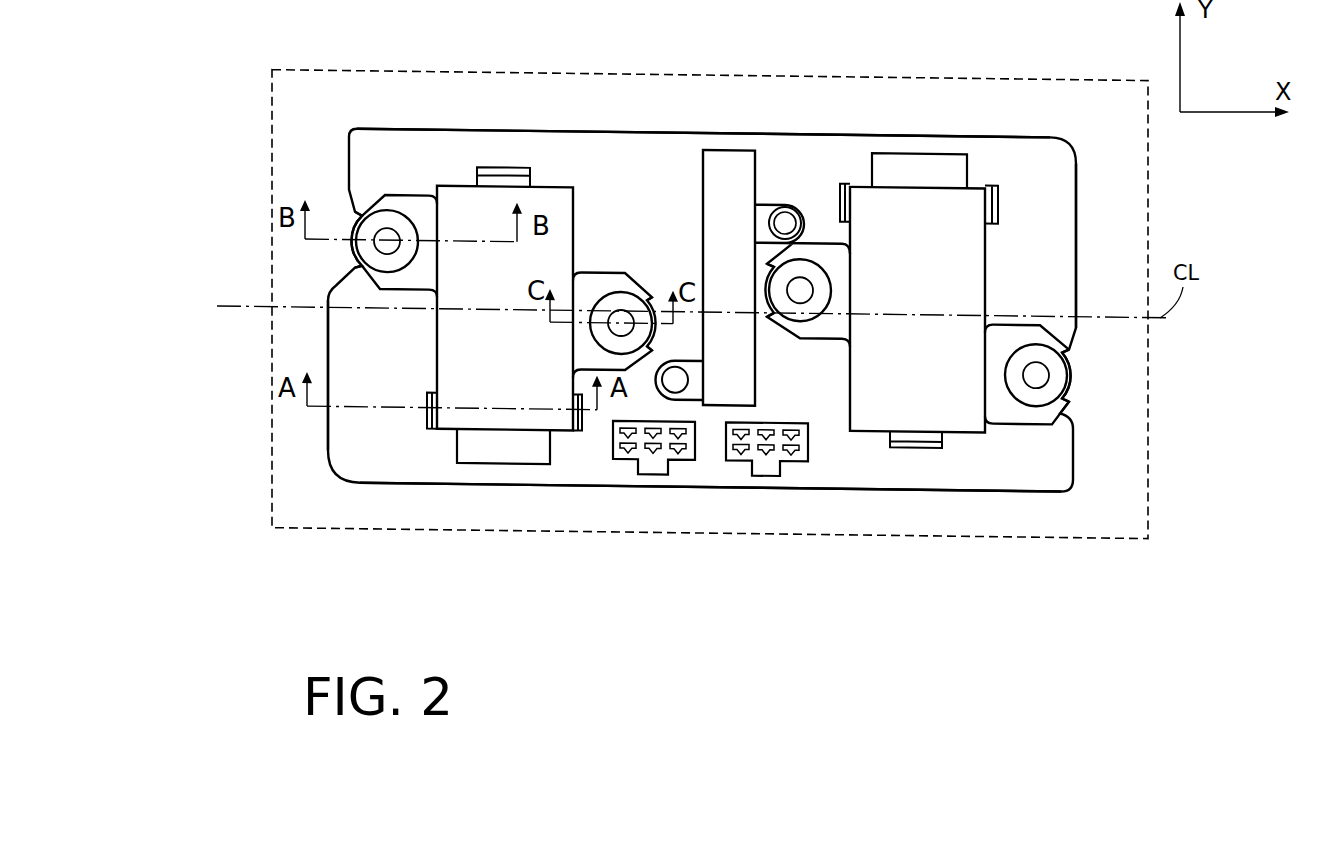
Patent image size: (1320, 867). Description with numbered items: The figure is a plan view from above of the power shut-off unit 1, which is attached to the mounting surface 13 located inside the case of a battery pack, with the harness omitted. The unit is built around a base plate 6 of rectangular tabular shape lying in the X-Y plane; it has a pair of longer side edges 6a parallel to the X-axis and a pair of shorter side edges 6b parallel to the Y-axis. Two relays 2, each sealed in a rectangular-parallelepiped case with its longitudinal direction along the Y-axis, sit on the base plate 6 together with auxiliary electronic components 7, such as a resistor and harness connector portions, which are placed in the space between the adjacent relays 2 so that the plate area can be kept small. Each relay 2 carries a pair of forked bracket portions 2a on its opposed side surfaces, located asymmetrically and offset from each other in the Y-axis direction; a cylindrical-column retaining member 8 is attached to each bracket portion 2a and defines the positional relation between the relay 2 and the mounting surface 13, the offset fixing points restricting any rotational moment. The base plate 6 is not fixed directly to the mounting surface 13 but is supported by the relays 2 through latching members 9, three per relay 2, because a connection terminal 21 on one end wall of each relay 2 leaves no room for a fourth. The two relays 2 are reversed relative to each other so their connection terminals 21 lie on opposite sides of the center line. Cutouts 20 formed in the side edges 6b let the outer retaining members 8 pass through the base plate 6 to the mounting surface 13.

The power shut-off unit 1 is at (1063, 108).
The relay 2 is at (452, 350).
The bracket portion 2a is at (353, 212).
The base plate 6 is at (360, 145).
The side edge 6a is at (603, 131).
The side edge 6b is at (327, 330).
The auxiliary electronic component 7 is at (728, 182).
The retaining member 8 is at (352, 247).
The latching member 9 is at (498, 172).
The mounting surface 13 is at (1120, 478).
The cutout 20 is at (352, 276).
The connection terminal 21 is at (897, 168).